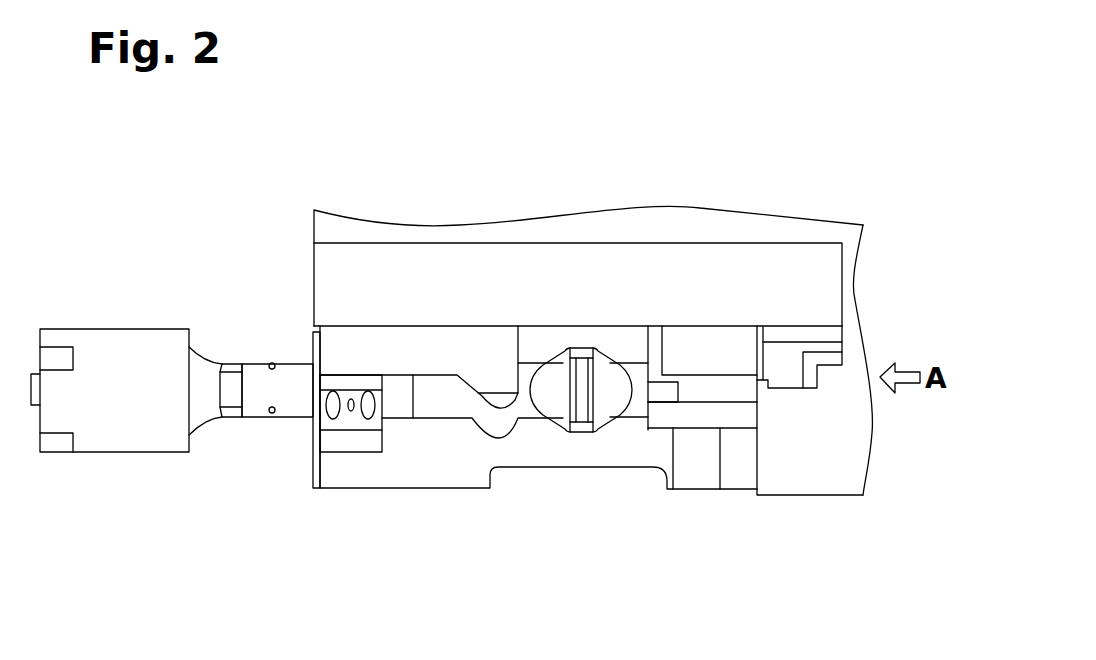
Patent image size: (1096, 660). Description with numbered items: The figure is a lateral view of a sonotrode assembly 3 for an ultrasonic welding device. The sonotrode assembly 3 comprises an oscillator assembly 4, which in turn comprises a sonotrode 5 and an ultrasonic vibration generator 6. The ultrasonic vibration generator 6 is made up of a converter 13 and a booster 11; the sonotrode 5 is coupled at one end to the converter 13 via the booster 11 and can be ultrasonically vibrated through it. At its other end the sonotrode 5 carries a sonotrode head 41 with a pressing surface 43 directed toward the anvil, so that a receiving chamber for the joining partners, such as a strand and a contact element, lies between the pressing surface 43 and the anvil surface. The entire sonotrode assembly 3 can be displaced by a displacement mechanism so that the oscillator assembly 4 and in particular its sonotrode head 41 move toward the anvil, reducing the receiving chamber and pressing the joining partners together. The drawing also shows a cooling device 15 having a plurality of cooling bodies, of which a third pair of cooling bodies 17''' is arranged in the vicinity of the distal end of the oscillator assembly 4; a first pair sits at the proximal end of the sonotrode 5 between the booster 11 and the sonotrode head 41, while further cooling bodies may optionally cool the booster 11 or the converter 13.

The sonotrode assembly 3 is at (168, 207).
The oscillator assembly 4 is at (190, 458).
The sonotrode 5 is at (450, 402).
The ultrasonic vibration generator 6 is at (275, 357).
The booster 11 is at (260, 395).
The converter 13 is at (127, 435).
The cooling device 15 is at (705, 567).
The third pair of cooling bodies 17''' is at (702, 443).
The sonotrode head 41 is at (587, 395).
The pressing surface 43 is at (578, 433).